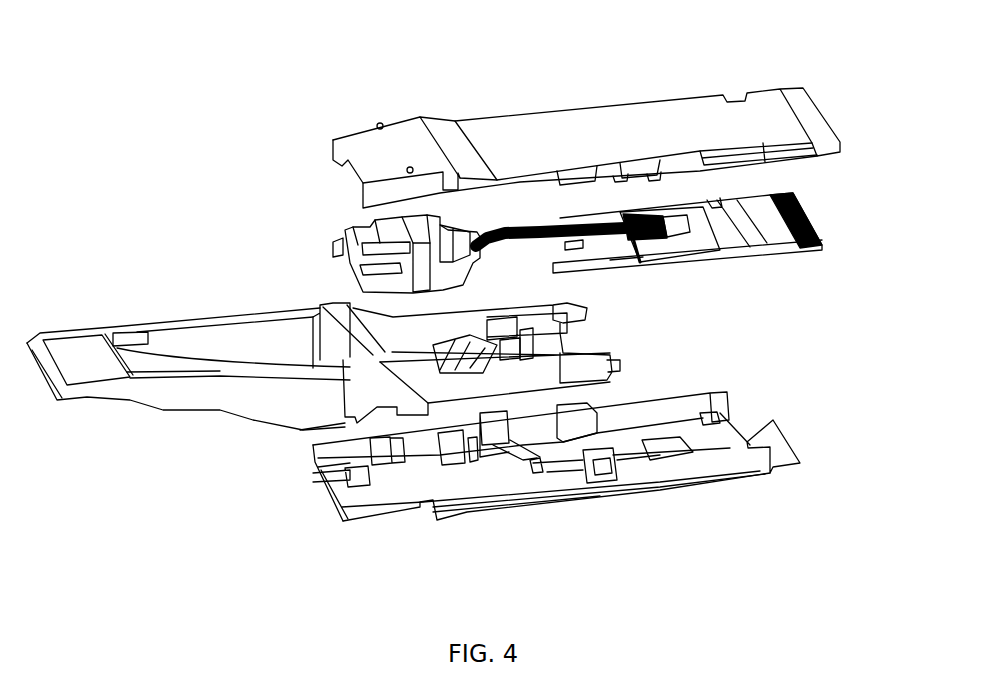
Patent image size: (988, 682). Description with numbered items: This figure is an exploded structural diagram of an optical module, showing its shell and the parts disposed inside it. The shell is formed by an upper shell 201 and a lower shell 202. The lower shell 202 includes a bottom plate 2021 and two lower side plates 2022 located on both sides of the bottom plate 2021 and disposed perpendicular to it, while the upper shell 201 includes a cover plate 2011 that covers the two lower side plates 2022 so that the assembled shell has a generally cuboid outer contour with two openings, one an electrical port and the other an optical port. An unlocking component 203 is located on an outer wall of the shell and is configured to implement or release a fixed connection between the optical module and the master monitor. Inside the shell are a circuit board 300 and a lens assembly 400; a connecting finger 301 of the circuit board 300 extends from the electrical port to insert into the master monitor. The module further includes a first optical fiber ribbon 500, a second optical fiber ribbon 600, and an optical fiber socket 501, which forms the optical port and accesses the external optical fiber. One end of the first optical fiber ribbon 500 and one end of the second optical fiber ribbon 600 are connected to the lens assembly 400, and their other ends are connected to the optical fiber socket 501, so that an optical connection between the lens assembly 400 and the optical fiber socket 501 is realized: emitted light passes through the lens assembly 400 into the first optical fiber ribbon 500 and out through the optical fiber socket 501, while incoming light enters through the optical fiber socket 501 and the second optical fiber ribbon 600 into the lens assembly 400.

The upper shell 201 is at (371, 25).
The cover plate 2011 is at (603, 118).
The lower shell 202 is at (343, 582).
The bottom plate 2021 is at (351, 475).
The lower side plates 2022 is at (405, 503).
The unlocking component 203 is at (240, 403).
The circuit board 300 is at (737, 240).
The connecting finger 301 is at (800, 213).
The lens assembly 400 is at (683, 243).
The first optical fiber ribbon 500 is at (548, 232).
The optical fiber socket 501 is at (377, 235).
The second optical fiber ribbon 600 is at (550, 232).